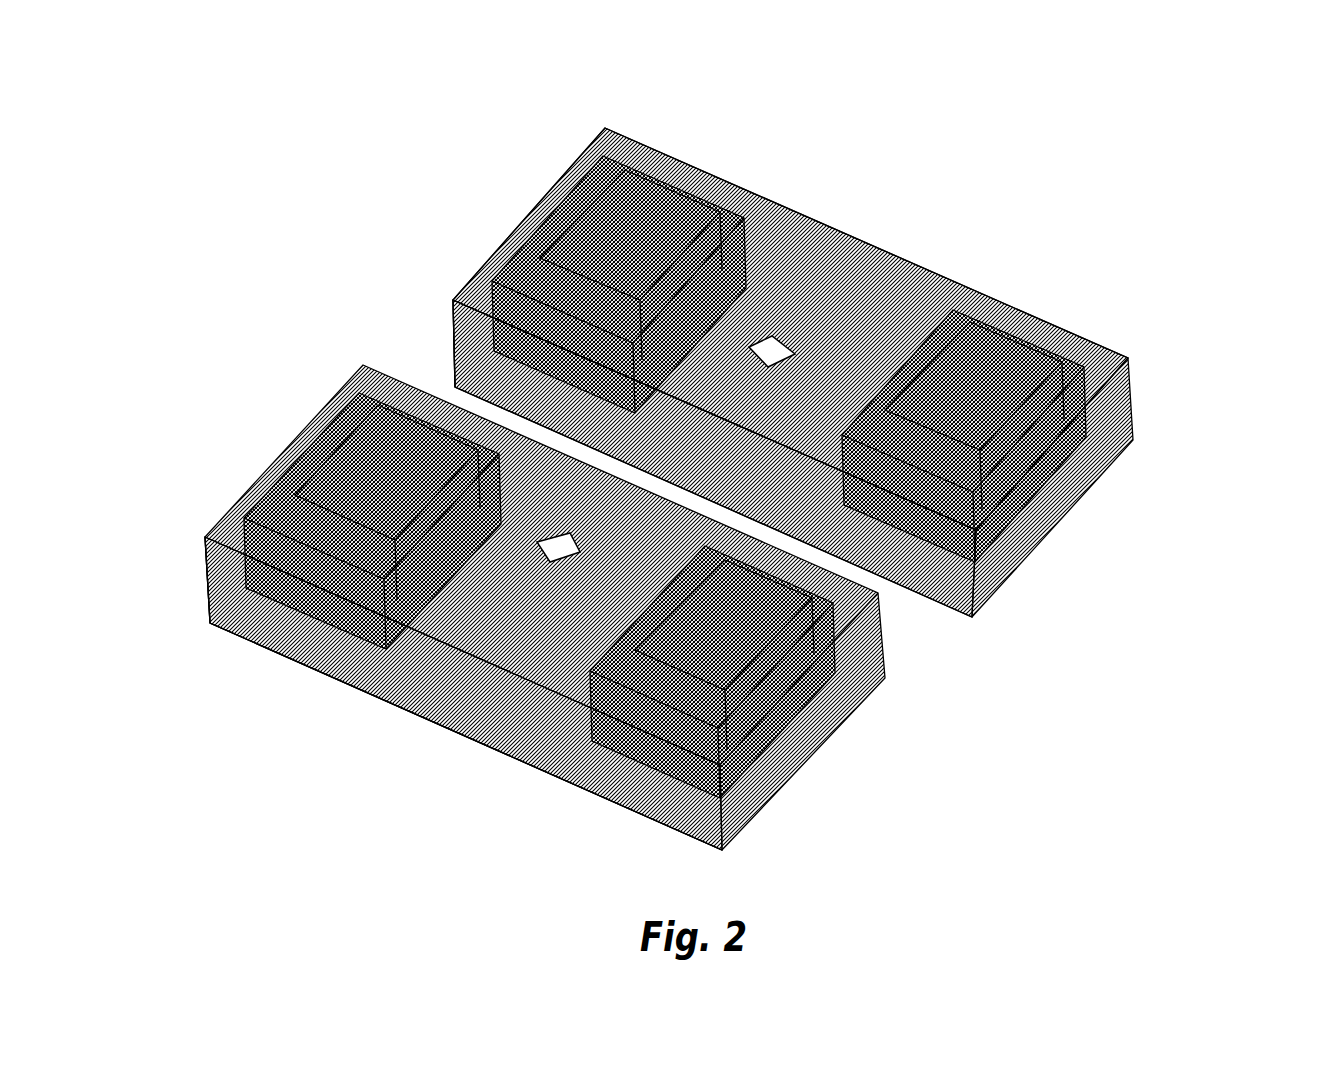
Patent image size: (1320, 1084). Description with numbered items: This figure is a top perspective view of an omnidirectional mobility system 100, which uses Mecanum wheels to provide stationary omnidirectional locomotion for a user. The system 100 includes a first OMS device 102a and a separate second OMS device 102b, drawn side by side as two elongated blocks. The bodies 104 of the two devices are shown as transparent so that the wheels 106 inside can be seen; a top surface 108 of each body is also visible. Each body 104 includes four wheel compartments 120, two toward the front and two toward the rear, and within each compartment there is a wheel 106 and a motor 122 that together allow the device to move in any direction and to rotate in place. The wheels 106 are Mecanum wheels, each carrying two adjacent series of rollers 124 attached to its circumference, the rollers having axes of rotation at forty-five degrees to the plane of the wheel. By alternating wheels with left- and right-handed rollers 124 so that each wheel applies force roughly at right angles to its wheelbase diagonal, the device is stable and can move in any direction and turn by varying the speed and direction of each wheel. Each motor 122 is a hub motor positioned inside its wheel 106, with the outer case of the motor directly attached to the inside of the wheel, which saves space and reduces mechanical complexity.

The omnidirectional mobility system 100 is at (700, 447).
The first OMS device 102a is at (1118, 495).
The second OMS device 102b is at (882, 765).
The body 104 is at (452, 300).
The wheel 106 is at (270, 660).
The top surface 108 is at (838, 233).
The wheel compartment 120 is at (640, 162).
The motor 122 is at (313, 628).
The roller 124 is at (1052, 335).